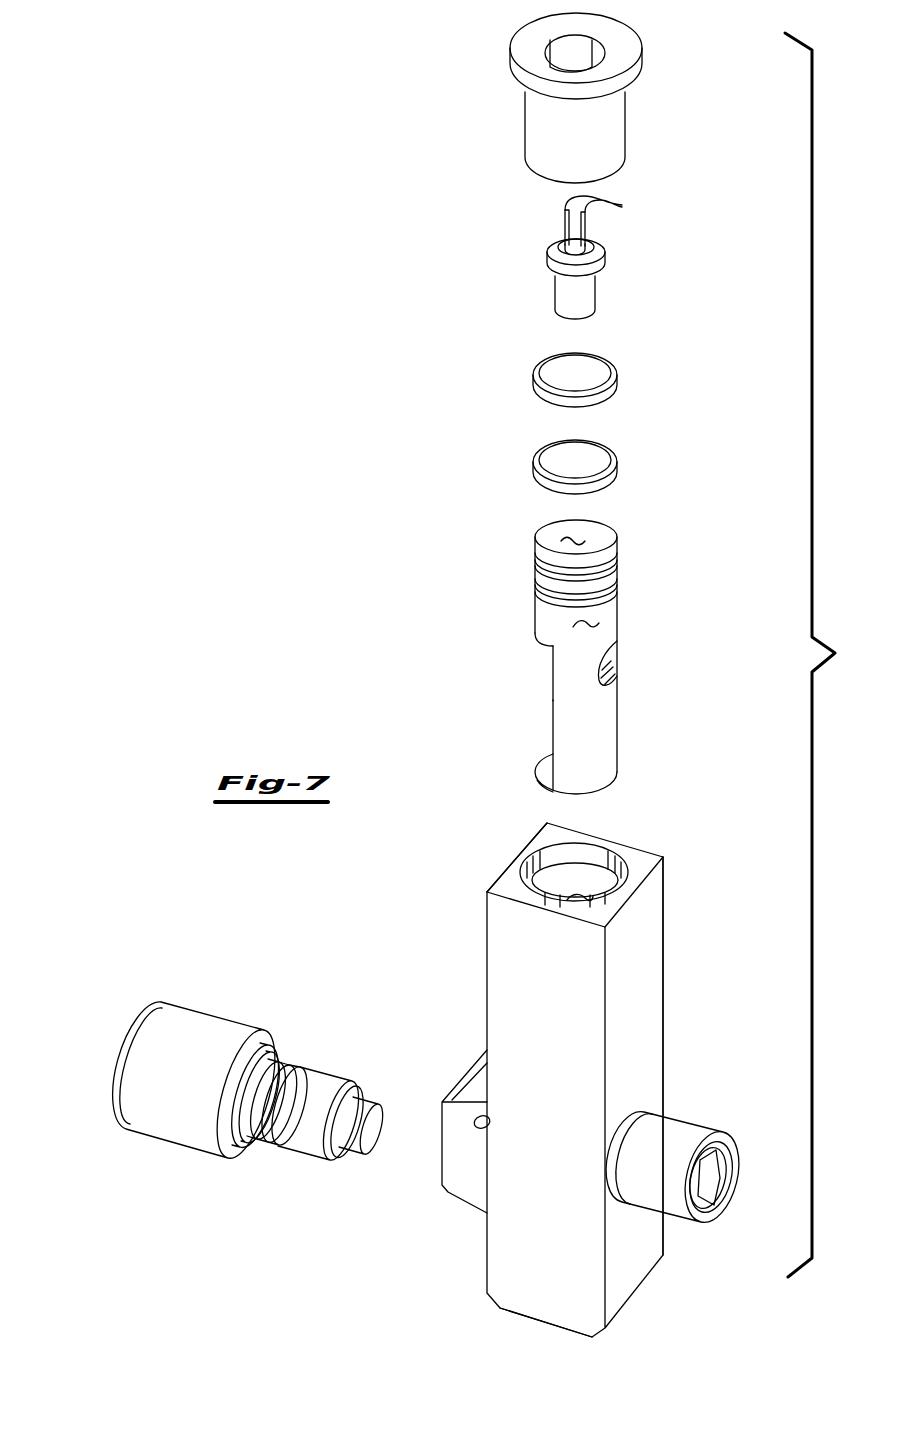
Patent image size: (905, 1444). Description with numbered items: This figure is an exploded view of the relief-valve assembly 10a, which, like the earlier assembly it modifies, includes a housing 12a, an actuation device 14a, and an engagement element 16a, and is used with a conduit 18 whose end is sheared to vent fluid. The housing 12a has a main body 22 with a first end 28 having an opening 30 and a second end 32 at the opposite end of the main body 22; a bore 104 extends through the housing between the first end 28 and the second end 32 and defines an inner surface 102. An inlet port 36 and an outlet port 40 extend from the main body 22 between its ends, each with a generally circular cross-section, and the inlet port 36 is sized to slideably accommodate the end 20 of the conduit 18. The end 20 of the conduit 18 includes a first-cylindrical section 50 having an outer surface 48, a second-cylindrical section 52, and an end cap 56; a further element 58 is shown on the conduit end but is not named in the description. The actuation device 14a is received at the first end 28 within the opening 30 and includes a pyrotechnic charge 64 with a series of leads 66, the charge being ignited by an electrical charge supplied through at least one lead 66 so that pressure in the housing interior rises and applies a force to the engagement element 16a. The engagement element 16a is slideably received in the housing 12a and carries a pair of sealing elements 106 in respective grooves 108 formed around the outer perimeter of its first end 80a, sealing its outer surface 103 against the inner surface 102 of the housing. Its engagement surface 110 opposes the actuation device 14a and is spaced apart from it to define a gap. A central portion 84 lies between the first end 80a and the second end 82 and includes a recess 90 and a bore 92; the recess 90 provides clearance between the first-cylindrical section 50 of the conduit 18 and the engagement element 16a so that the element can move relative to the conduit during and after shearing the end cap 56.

The relief-valve assembly 10a is at (831, 655).
The actuation device 14a is at (500, 198).
The pyrotechnic charge 64 is at (567, 292).
The leads 66 is at (605, 201).
The sealing element 106 is at (614, 386).
The engagement element 16a is at (625, 635).
The first end 80a is at (545, 540).
The engagement surface 110 is at (573, 540).
The groove 108 is at (605, 575).
The outer surface 103 is at (553, 647).
The recess 90 is at (553, 718).
The bore 92 is at (610, 670).
The central portion 84 is at (610, 725).
The second end 82 is at (610, 787).
The housing 12a is at (678, 972).
The first end 28 is at (650, 858).
The bore 104 is at (550, 884).
The opening 30 is at (592, 878).
The inner surface 102 is at (576, 894).
The main body 22 is at (652, 1048).
The second end 32 is at (626, 1303).
The inlet port 36 is at (448, 1110).
The outlet port 40 is at (690, 1125).
The conduit 18 is at (138, 1146).
The second-cylindrical section 52 is at (180, 1018).
The washer 58 is at (260, 1040).
The end 20 is at (348, 1068).
The outer surface 48 is at (320, 1130).
The first-cylindrical section 50 is at (317, 1078).
The end cap 56 is at (366, 1152).